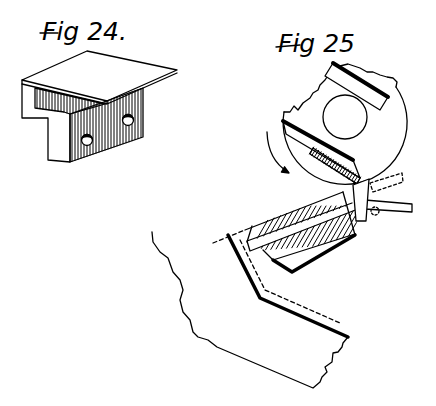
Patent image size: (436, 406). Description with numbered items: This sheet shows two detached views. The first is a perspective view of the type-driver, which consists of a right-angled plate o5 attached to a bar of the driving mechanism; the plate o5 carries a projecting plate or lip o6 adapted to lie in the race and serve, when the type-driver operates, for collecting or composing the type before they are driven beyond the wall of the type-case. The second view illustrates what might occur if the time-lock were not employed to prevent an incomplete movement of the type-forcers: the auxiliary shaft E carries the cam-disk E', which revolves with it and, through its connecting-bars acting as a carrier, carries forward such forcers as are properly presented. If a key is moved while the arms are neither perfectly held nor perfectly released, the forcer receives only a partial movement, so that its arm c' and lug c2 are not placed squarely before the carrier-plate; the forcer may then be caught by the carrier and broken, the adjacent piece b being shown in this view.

In FIG. 24, the right-angled plate o5 is at (49, 147).
In FIG. 24, the projecting plate or lip o6 is at (99, 77).
In FIG. 25, the auxiliary shaft E is at (345, 117).
In FIG. 25, the cam-disk E' is at (334, 125).
In FIG. 25, the transverse flange or lug c' is at (388, 189).
In FIG. 25, the transverse flange or lug c2 is at (373, 206).
In FIG. 25, the plate b is at (250, 310).